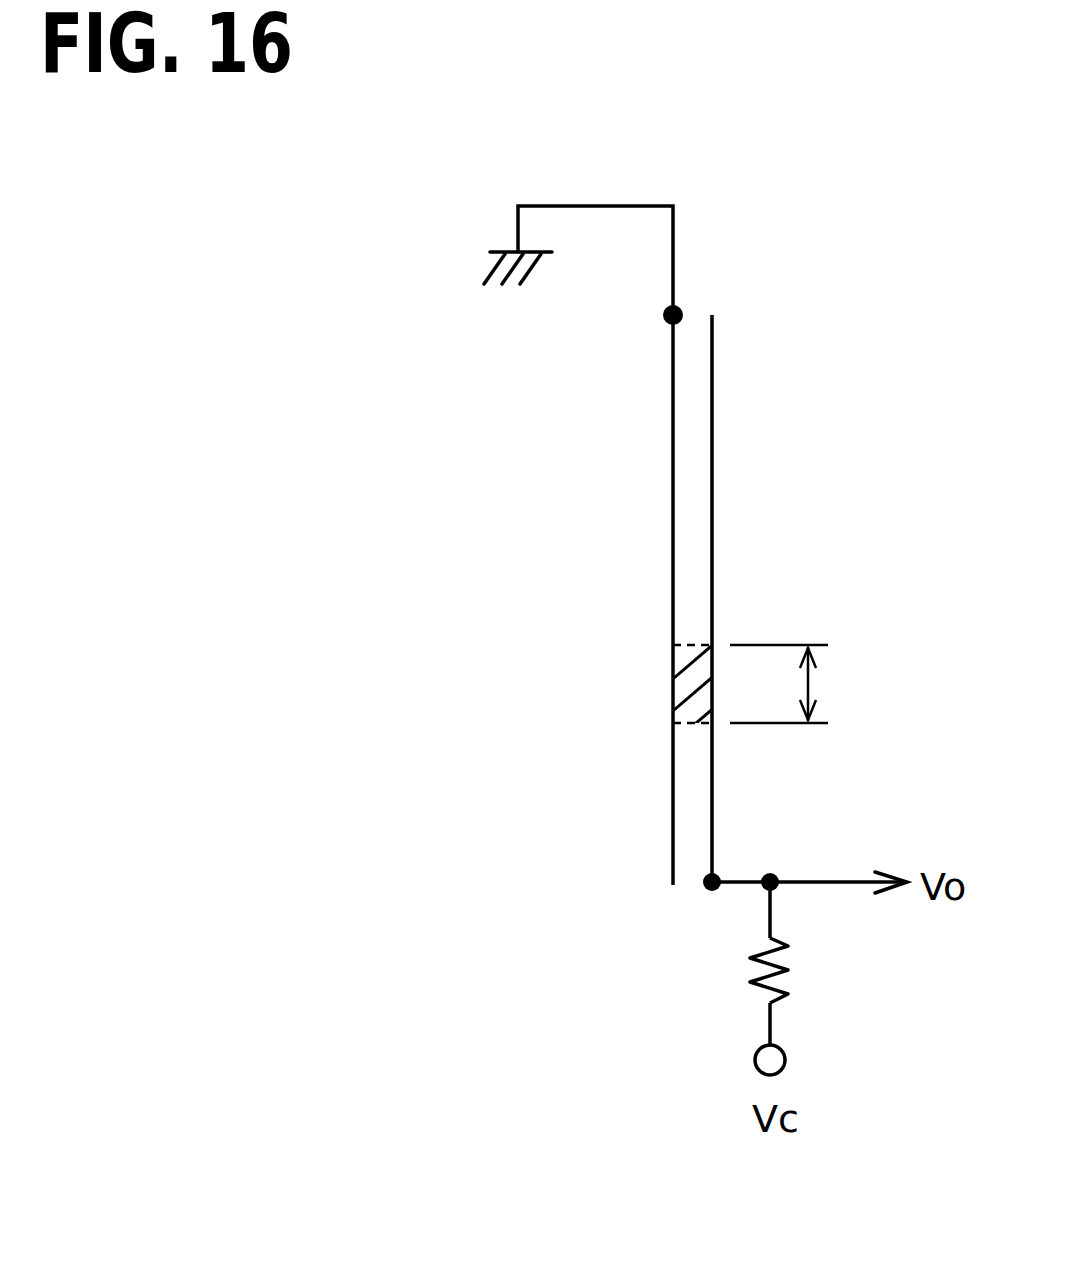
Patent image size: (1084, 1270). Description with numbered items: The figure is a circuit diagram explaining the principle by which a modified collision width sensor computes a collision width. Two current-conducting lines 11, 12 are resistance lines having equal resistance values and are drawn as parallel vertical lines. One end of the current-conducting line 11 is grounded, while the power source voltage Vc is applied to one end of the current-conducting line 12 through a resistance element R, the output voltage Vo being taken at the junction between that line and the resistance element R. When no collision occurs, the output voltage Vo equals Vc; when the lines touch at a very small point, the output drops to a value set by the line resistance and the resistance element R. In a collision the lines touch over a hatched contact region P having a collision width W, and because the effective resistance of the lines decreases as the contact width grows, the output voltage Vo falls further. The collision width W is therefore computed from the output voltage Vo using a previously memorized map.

The current-conducting line 11 is at (672, 481).
The current-conducting line 12 is at (713, 505).
The contact region P is at (688, 683).
The collision width W is at (799, 684).
The resistance element R is at (757, 976).